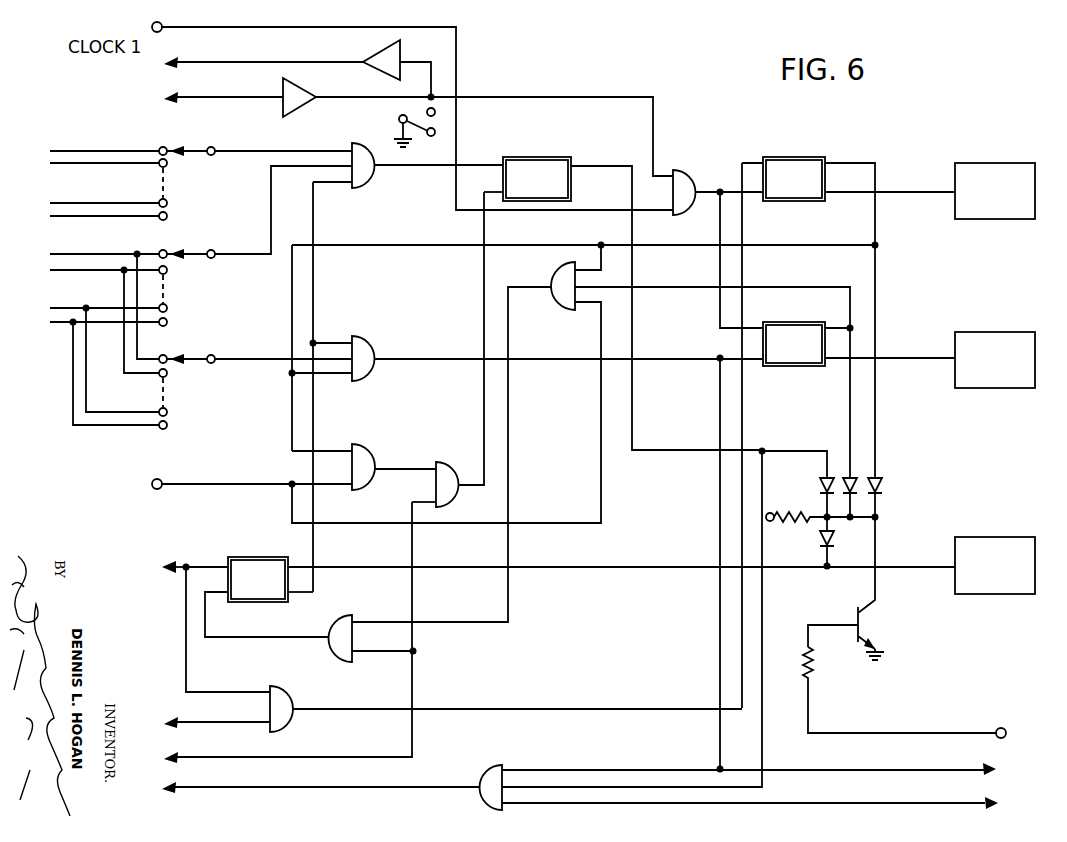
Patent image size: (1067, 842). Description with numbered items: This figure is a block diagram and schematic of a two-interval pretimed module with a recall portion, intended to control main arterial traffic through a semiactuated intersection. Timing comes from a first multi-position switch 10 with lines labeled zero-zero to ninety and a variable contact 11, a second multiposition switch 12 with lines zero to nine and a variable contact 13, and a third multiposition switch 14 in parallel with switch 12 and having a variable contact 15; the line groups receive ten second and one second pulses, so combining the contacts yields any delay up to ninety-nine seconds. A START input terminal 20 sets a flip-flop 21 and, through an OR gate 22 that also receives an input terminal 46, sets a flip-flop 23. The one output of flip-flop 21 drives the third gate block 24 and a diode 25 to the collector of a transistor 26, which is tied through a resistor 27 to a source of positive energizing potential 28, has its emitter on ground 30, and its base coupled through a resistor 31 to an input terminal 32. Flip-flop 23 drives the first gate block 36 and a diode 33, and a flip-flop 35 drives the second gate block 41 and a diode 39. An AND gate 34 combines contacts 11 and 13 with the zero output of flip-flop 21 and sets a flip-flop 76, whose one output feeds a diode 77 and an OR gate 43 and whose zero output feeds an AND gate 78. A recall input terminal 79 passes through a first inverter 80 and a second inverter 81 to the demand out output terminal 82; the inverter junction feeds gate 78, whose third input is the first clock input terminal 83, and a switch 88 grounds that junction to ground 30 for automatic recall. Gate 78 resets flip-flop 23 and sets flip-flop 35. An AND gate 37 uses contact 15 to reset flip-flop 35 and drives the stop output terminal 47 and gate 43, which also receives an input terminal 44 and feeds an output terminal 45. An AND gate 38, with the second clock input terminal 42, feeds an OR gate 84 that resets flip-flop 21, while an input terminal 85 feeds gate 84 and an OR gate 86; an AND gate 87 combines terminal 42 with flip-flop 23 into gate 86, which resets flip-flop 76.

The input terminal 83 is at (152, 27).
The output terminal 82 is at (261, 50).
The recall input terminal 79 is at (223, 85).
The second inverter 81 is at (387, 53).
The first inverter 80 is at (298, 90).
The switch 88 is at (417, 115).
The common conductor or ground 30 is at (398, 136).
The variable contact 11 is at (193, 148).
The first multi-position switch 10 is at (208, 196).
The variable contact 13 is at (193, 251).
The second multiposition switch 12 is at (208, 302).
The variable contact 15 is at (195, 353).
The third multiposition switch 14 is at (208, 406).
The AND gate 34 is at (376, 179).
The flip-flop 76 is at (546, 189).
The AND gate 78 is at (685, 172).
The flip-flop 23 is at (805, 189).
The block labeled GATE 1 36 is at (991, 163).
The AND gate 38 is at (556, 269).
The AND gate 37 is at (373, 348).
The AND gate 87 is at (366, 453).
The OR gate 86 is at (460, 456).
The flip-flop 35 is at (805, 354).
The block labeled GATE 2 41 is at (991, 332).
The input terminal 42 is at (162, 480).
The flip-flop 21 is at (268, 588).
The input terminal 20 is at (209, 616).
The OR gate 84 is at (337, 622).
The OR gate 22 is at (291, 694).
The input terminal 46 is at (216, 713).
The input terminal 85 is at (288, 632).
The output terminal 45 is at (321, 778).
The OR gate 43 is at (479, 781).
The diode 77 is at (823, 477).
The diode 39 is at (853, 478).
The diode 33 is at (883, 480).
The source of positive energizing potential 28 is at (820, 505).
The resistor 27 is at (784, 536).
The diode 25 is at (836, 540).
The block labeled GATE 3 24 is at (989, 537).
The transistor 26 is at (898, 634).
The resistor 31 is at (813, 667).
The input terminal 32 is at (1008, 723).
The output terminal 47 is at (1015, 761).
The input terminal 44 is at (1004, 812).